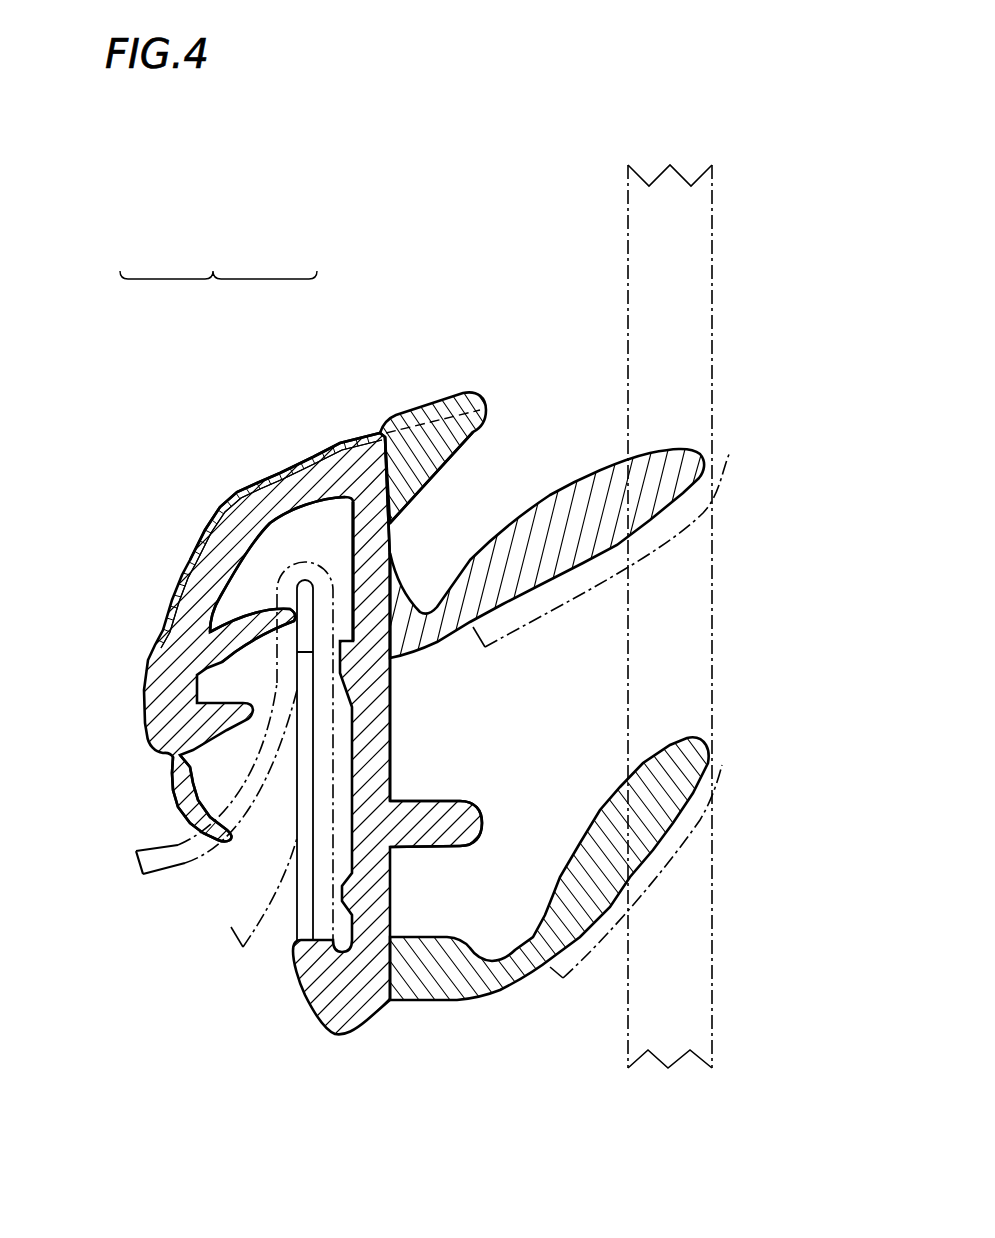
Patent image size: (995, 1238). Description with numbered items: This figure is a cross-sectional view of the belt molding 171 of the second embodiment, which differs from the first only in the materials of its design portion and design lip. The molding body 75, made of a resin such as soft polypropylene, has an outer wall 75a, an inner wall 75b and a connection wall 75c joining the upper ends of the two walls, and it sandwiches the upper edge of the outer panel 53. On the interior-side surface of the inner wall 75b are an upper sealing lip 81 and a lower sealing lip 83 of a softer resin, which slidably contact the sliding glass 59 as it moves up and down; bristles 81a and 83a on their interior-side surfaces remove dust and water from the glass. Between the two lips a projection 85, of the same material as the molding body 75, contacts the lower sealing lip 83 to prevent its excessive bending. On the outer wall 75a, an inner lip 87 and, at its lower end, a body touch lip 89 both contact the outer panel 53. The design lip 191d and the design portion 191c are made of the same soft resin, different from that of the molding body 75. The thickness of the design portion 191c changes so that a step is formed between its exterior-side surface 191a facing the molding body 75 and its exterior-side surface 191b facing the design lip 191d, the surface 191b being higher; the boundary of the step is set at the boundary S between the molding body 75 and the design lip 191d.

The glass run 171 is at (147, 201).
The molding body 75 is at (251, 444).
The outer wall 75a is at (193, 593).
The inner wall 75b is at (365, 562).
The connection wall 75c is at (260, 507).
The exterior-side surface of the design portion facing the molding body 191a is at (298, 458).
The exterior-side surface of the design portion facing the design lip 191b is at (441, 396).
The design portion 191c is at (370, 555).
The design lip 191d is at (435, 470).
The boundary between the molding body and the design lip S is at (401, 496).
The sliding glass 59 is at (712, 290).
The upper sealing lip 81 is at (670, 455).
The bristles 81a is at (730, 457).
The lower sealing lip 83 is at (687, 737).
The bristles 83a is at (724, 726).
The projection 85 is at (460, 813).
The inner lip 87 is at (220, 658).
The body touch lip 89 is at (180, 773).
The outer panel 53 is at (173, 866).